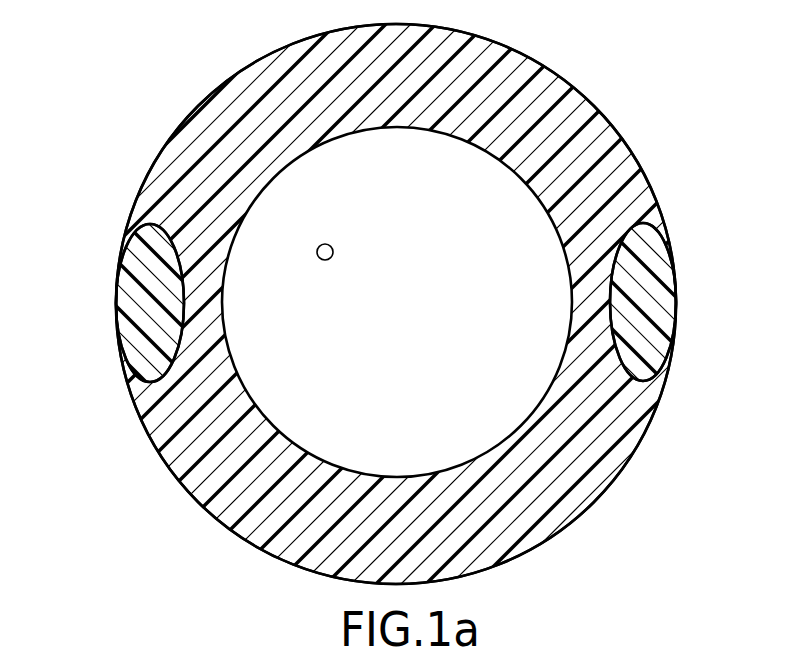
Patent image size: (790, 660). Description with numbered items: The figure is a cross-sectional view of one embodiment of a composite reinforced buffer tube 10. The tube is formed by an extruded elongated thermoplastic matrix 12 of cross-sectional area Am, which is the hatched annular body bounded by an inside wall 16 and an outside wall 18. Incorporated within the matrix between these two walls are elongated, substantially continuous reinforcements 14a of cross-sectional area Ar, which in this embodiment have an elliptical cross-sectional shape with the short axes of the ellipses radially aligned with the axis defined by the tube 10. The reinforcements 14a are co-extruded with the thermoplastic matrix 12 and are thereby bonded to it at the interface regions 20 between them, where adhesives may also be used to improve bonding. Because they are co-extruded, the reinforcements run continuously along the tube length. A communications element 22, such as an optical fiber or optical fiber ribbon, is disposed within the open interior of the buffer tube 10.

The buffer tube 10 is at (172, 79).
The thermoplastic matrix 12 is at (595, 120).
The reinforcement 14a is at (130, 283).
The inside wall 16 is at (317, 455).
The outside wall 18 is at (612, 480).
The interface region 20 is at (186, 305).
The communications element 22 is at (325, 260).